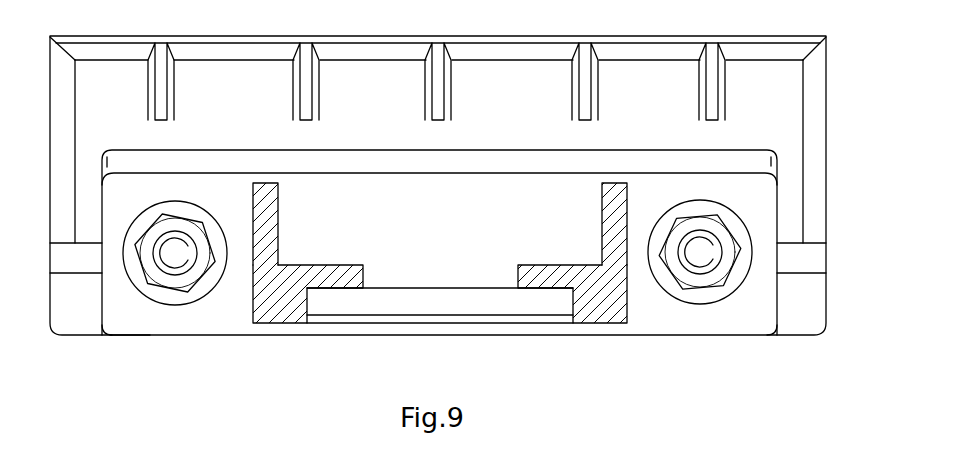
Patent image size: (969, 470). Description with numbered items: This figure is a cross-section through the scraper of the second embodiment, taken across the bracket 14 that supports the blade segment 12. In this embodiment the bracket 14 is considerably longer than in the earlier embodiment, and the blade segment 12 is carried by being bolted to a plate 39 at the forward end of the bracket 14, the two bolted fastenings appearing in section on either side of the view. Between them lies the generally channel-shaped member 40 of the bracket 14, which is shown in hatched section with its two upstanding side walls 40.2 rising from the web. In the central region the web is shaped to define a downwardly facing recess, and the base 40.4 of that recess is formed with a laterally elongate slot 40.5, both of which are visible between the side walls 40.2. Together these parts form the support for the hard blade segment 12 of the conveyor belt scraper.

The blade segment 12 is at (813, 121).
The blade segment support bracket 14 is at (240, 305).
The plate 39 is at (127, 320).
The channel-shaped member 40 is at (426, 285).
The side walls 40.2 is at (278, 212).
The base of the recess 40.4 is at (336, 273).
The laterally elongate slot 40.5 is at (448, 273).